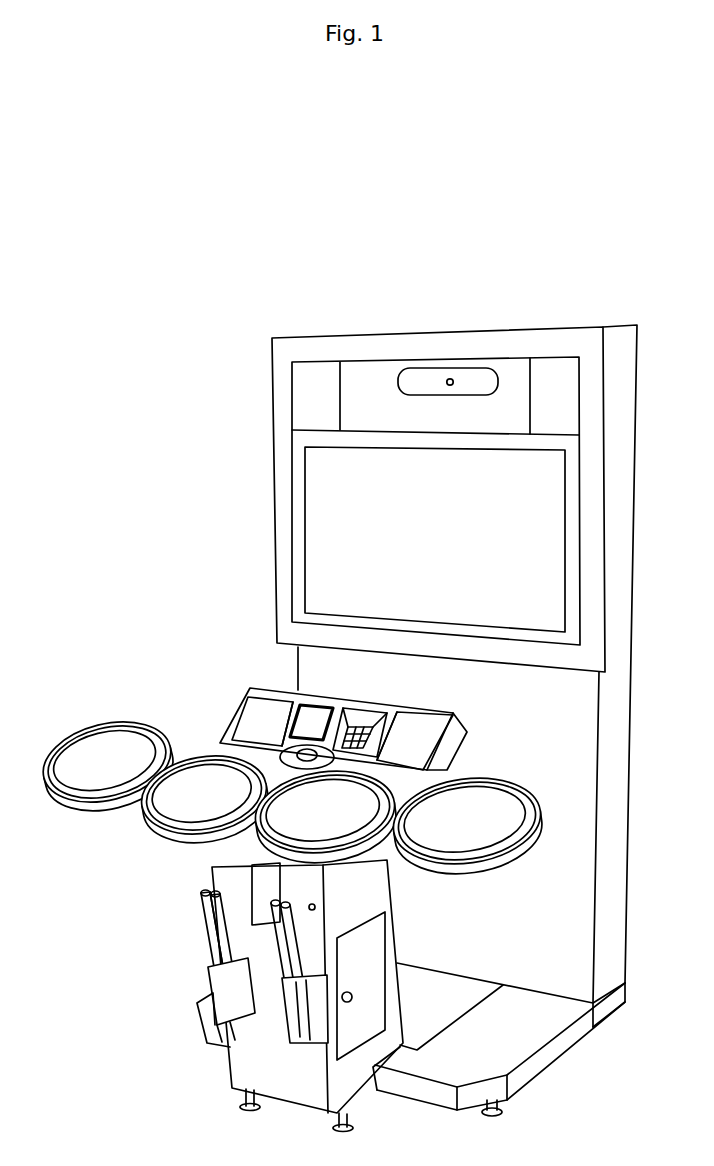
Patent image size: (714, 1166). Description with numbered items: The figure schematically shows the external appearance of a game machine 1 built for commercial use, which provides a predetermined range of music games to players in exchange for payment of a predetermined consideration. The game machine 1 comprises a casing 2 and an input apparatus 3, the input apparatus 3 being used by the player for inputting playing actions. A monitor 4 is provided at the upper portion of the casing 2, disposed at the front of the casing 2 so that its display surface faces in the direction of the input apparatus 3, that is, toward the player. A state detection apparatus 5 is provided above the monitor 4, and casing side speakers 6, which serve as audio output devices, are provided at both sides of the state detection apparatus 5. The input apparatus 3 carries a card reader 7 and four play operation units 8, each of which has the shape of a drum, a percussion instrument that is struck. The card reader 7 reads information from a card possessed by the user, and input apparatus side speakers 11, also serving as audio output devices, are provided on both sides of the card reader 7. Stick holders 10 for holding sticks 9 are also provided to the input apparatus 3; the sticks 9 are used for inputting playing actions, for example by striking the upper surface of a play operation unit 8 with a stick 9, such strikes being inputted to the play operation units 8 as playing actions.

The game machine 1 is at (216, 253).
The casing 2 is at (629, 447).
The input apparatus 3 is at (199, 682).
The monitor 4 is at (565, 528).
The state detection apparatus 5 is at (467, 364).
The casing side speakers 6 is at (292, 393).
The card reader 7 is at (312, 706).
The play operation units 8 is at (396, 866).
The sticks 9 is at (203, 936).
The stick holders 10 is at (212, 983).
The input apparatus side speakers 11 is at (245, 725).